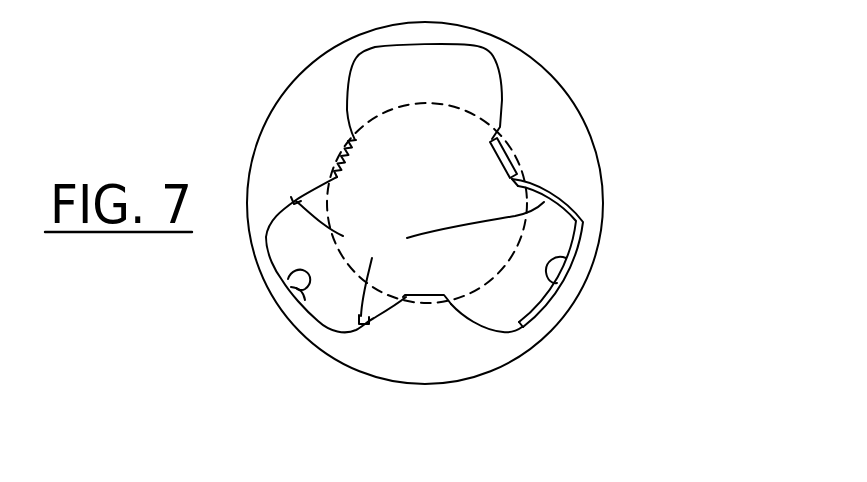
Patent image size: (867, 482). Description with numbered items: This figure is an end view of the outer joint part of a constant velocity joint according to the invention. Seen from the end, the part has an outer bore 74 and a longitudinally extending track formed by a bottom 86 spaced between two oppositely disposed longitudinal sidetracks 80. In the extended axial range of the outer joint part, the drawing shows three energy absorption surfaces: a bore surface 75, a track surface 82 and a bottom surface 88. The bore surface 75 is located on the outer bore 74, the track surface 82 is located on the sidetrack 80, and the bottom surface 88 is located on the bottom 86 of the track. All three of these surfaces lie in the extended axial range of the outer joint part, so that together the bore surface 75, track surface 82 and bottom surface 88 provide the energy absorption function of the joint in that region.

The outer bore 74 is at (416, 295).
The bore surface 75 is at (357, 150).
The longitudinal sidetrack 80 is at (505, 102).
The track surface 82 is at (343, 236).
The bottom 86 is at (450, 43).
The bottom surface 88 is at (292, 273).